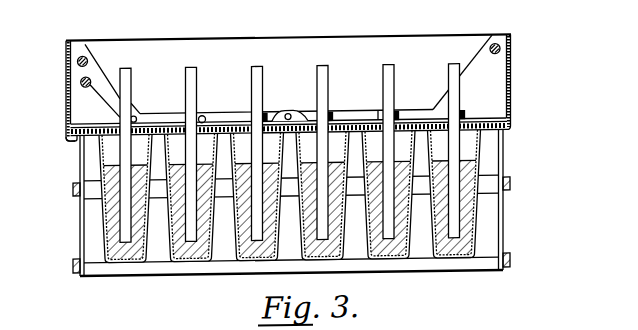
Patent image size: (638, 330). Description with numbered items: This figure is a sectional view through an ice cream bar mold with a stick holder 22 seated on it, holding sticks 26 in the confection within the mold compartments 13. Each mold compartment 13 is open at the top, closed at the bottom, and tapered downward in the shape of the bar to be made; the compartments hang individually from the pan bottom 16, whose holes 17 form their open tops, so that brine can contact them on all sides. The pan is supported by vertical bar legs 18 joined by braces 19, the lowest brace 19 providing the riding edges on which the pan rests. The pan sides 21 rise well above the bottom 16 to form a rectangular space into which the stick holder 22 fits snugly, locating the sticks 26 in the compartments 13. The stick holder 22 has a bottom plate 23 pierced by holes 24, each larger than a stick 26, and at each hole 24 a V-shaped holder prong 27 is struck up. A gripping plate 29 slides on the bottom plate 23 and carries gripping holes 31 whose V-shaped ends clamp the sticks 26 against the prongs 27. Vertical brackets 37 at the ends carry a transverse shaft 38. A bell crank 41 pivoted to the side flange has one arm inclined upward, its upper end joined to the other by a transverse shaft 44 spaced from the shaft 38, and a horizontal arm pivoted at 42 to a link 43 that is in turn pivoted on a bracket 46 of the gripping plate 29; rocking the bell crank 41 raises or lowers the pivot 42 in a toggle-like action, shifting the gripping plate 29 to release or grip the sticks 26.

The mold compartment 13 is at (257, 216).
The pan bottom 16 is at (70, 141).
The hole 17 is at (112, 138).
The vertical bar leg 18 is at (81, 229).
The brace 19 is at (74, 185).
The pan side 21 is at (66, 91).
The stick holder 22 is at (500, 75).
The bottom plate 23 is at (510, 120).
The hole 24 is at (376, 116).
The stick 26 is at (256, 66).
The holder prong 27 is at (332, 117).
The gripping plate 29 is at (497, 122).
The gripping hole 31 is at (407, 113).
The vertical bracket 37 is at (498, 85).
The shaft 38 is at (83, 53).
The bell crank 41 is at (97, 90).
The pivot 42 is at (203, 114).
The link 43 is at (232, 117).
The transverse shaft 44 is at (81, 76).
The bracket 46 is at (296, 110).